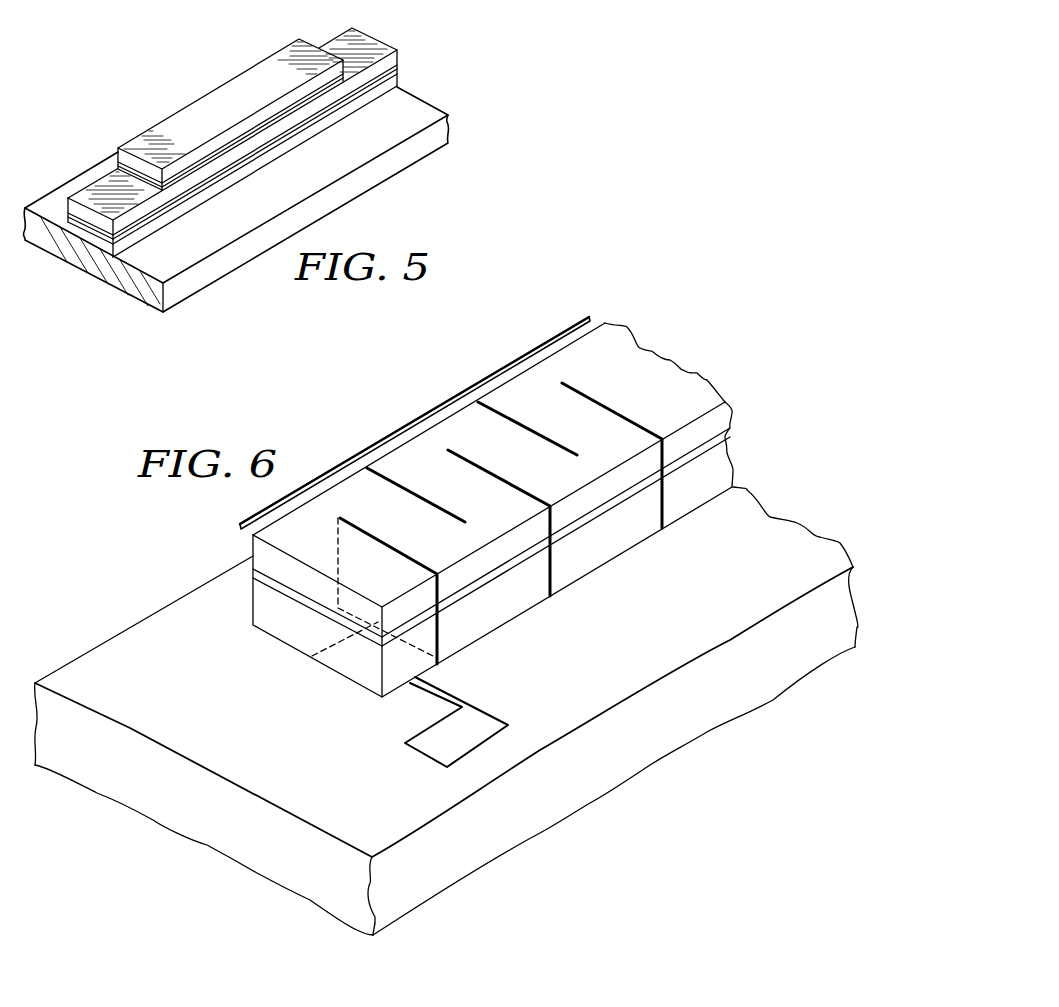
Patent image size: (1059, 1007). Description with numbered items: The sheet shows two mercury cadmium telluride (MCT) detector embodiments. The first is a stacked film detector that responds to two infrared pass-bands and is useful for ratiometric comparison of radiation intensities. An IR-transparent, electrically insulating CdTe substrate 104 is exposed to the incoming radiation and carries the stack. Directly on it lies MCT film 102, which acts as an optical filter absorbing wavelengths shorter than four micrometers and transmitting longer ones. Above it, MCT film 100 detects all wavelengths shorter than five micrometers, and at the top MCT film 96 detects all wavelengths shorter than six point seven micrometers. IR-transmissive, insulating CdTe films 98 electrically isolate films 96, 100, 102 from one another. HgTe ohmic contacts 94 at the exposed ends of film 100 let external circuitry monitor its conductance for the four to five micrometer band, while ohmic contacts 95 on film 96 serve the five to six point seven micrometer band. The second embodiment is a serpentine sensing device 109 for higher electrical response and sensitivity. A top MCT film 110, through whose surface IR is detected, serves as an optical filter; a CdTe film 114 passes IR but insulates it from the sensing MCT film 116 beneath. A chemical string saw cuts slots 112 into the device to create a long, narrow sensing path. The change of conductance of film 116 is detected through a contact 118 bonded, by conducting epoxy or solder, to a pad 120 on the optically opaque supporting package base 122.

In FIG. 5, the ohmic contacts 94 is at (90, 195).
In FIG. 5, the ohmic contacts 95 is at (141, 143).
In FIG. 5, the MCT film 96 is at (239, 118).
In FIG. 5, the CdTe films 98 is at (326, 98).
In FIG. 5, the MCT film 100 is at (243, 150).
In FIG. 5, the MCT film 102 is at (155, 222).
In FIG. 5, the substrate 104 is at (87, 263).
In FIG. 6, the sensing device 109 is at (408, 424).
In FIG. 6, the MCT film 110 is at (618, 338).
In FIG. 6, the slots 112 is at (410, 492).
In FIG. 6, the CdTe film 114 is at (462, 598).
In FIG. 6, the MCT film 116 is at (534, 597).
In FIG. 6, the contact 118 is at (320, 637).
In FIG. 6, the pad 120 is at (482, 718).
In FIG. 6, the supporting package base 122 is at (165, 819).